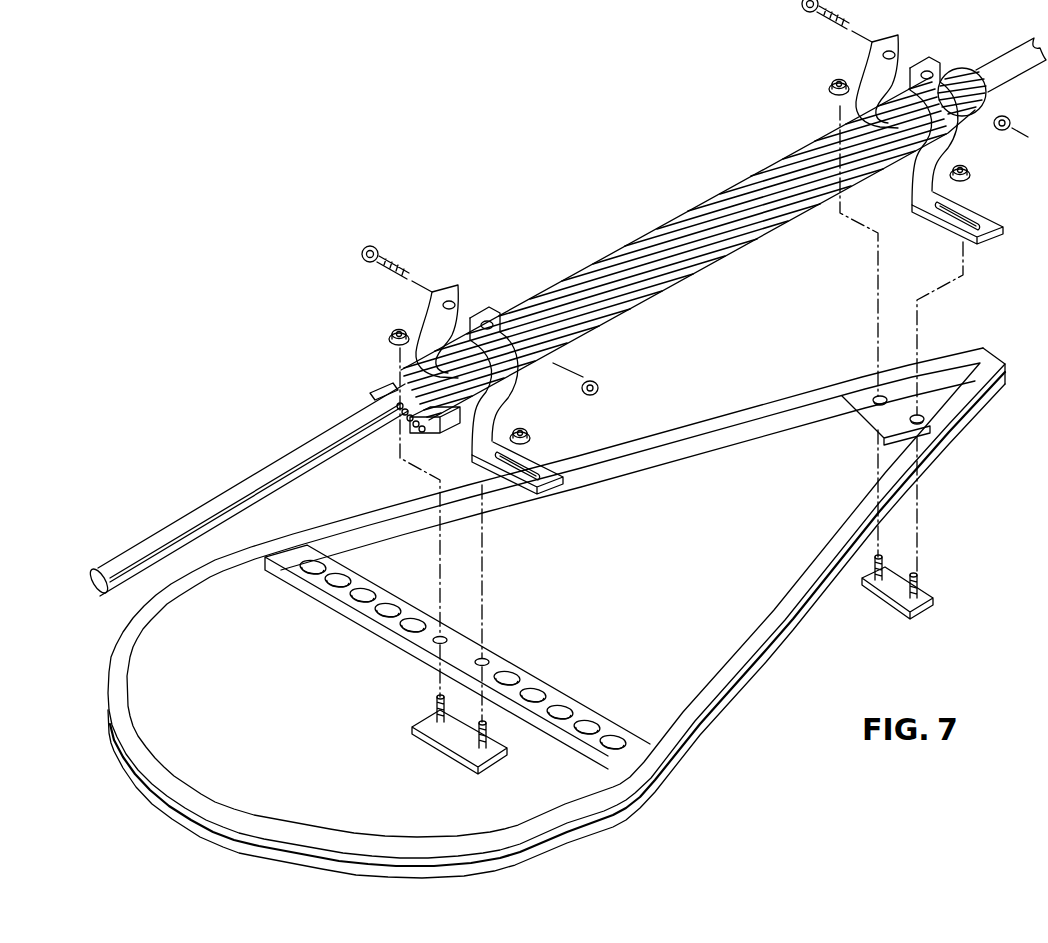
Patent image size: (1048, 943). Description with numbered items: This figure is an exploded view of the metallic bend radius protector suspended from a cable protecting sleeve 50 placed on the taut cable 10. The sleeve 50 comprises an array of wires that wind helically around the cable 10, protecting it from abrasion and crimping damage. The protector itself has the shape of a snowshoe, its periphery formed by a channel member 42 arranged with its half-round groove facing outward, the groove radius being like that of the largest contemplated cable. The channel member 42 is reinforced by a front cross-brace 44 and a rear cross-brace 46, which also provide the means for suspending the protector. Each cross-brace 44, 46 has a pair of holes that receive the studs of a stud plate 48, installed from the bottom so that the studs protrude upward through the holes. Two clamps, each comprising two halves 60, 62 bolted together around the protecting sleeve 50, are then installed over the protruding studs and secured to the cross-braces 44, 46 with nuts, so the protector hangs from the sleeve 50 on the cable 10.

The taut cable 10 is at (180, 517).
The channel member 42 is at (653, 458).
The front cross-brace 44 is at (507, 663).
The rear cross-brace 46 is at (887, 415).
The stud plate 48 is at (443, 737).
The cable protecting sleeve 50 is at (657, 230).
The clamp half 60 is at (507, 383).
The clamp half 62 is at (455, 287).